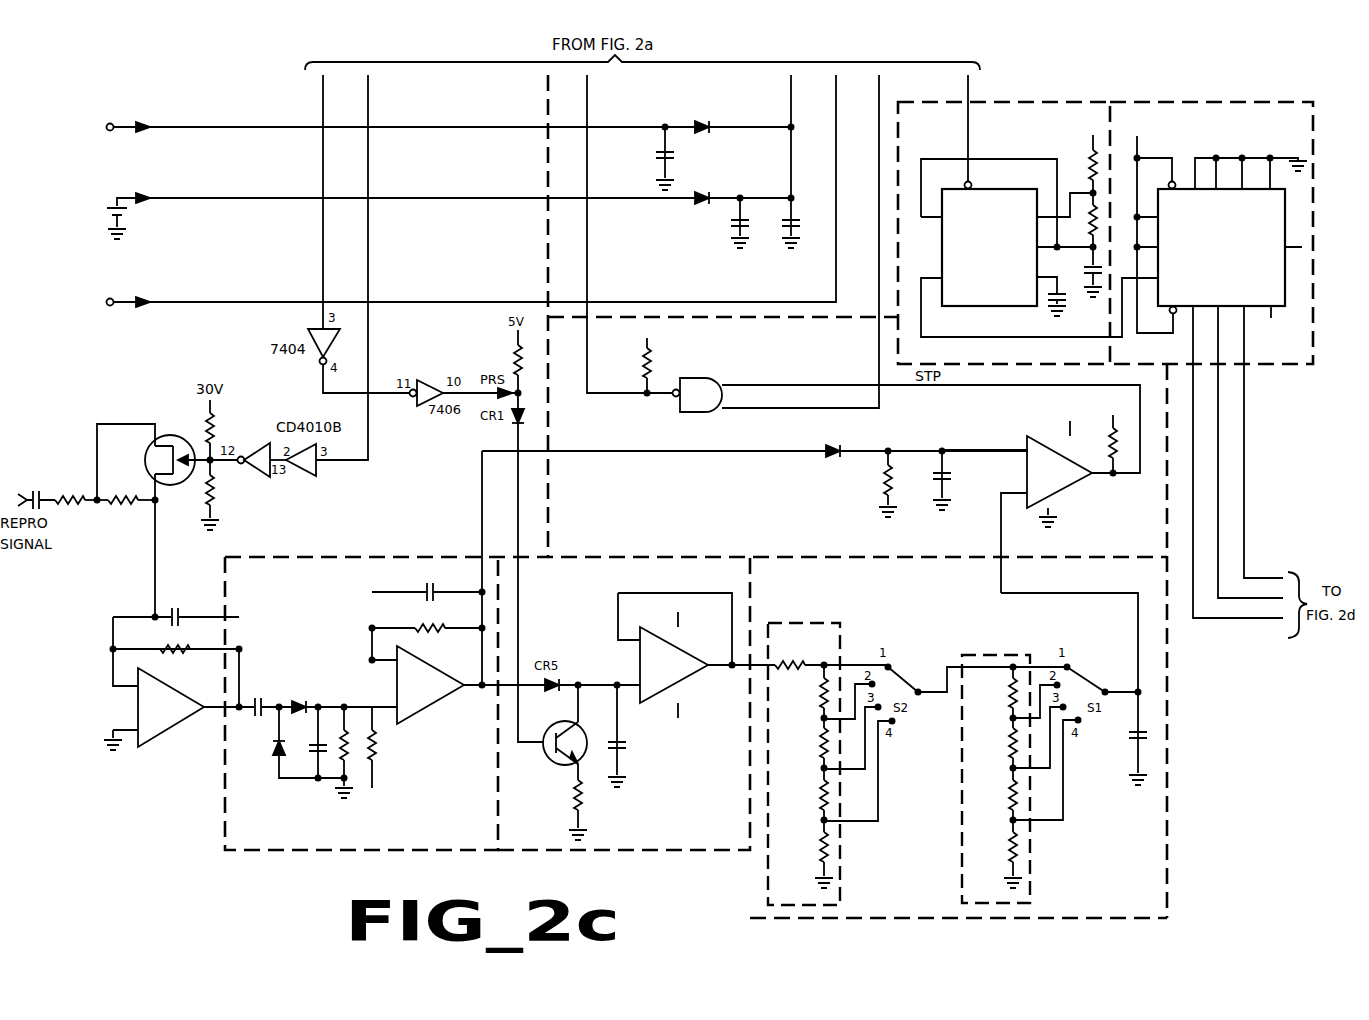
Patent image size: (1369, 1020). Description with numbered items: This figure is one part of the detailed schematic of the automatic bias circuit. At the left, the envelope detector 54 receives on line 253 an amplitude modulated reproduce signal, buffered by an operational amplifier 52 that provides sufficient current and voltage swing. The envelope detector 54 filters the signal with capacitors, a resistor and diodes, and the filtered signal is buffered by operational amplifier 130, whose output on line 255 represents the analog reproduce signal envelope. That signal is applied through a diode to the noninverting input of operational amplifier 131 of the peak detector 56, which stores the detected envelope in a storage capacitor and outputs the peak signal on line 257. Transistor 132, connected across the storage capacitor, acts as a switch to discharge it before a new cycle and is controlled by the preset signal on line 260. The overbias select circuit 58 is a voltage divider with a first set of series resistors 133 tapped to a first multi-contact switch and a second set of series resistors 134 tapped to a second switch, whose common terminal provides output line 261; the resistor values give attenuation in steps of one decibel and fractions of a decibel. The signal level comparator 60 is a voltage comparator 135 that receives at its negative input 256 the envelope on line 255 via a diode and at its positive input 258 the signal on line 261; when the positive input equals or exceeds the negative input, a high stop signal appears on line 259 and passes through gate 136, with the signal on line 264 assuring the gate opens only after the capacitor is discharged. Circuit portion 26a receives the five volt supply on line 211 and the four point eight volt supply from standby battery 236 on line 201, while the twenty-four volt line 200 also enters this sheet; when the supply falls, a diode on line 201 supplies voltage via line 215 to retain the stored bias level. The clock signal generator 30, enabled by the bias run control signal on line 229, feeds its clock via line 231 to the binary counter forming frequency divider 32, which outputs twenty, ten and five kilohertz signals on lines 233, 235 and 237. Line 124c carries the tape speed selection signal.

The line 211 is at (180, 127).
The line 201 is at (180, 198).
The standby battery 236 is at (128, 210).
The 24V supply line 200 is at (180, 302).
The line 260 is at (320, 95).
The line 124c is at (370, 95).
The line 259 is at (589, 87).
The line 215 is at (789, 93).
The line 264 is at (877, 109).
The line 229 is at (970, 90).
The circuit portion 26a is at (692, 284).
The clock signal generator 30 is at (1043, 134).
The frequency divider 32 is at (1268, 134).
The line 231 is at (985, 341).
The gate 136 is at (697, 378).
The line 255 is at (648, 456).
The voltage comparator 135 is at (1038, 435).
The negative input 256 is at (1020, 452).
The positive input 258 is at (1024, 500).
The output line 261 is at (1058, 593).
The line 233 is at (1195, 466).
The line 235 is at (1220, 442).
The line 237 is at (1246, 420).
The signal level comparator 60 is at (820, 539).
The envelope detector 54 is at (305, 602).
The peak detector 56 is at (572, 606).
The overbias select circuit 58 is at (910, 604).
The operational amplifier 52 is at (180, 690).
The line 253 is at (213, 712).
The operational amplifier 130 is at (432, 660).
The transistor 132 is at (546, 733).
The operational amplifier 131 is at (684, 652).
The line 257 is at (739, 670).
The first set of series resistors 133 is at (790, 622).
The second set of series resistors 134 is at (1030, 652).